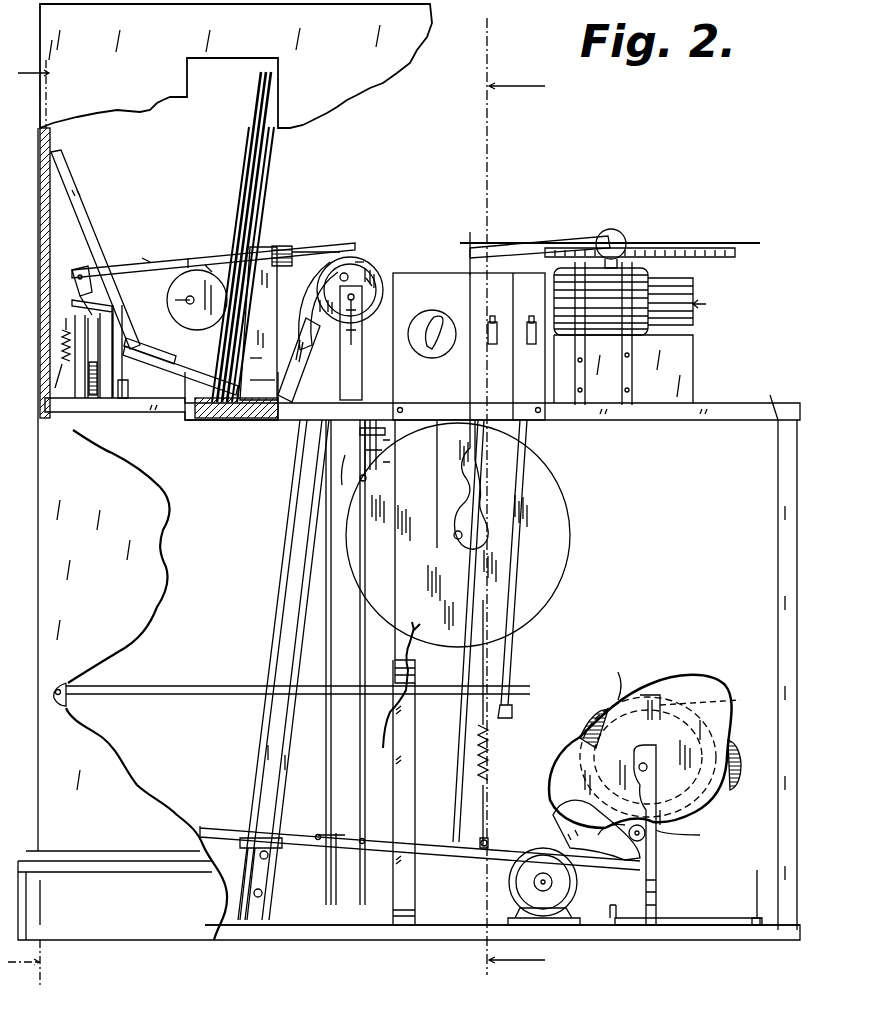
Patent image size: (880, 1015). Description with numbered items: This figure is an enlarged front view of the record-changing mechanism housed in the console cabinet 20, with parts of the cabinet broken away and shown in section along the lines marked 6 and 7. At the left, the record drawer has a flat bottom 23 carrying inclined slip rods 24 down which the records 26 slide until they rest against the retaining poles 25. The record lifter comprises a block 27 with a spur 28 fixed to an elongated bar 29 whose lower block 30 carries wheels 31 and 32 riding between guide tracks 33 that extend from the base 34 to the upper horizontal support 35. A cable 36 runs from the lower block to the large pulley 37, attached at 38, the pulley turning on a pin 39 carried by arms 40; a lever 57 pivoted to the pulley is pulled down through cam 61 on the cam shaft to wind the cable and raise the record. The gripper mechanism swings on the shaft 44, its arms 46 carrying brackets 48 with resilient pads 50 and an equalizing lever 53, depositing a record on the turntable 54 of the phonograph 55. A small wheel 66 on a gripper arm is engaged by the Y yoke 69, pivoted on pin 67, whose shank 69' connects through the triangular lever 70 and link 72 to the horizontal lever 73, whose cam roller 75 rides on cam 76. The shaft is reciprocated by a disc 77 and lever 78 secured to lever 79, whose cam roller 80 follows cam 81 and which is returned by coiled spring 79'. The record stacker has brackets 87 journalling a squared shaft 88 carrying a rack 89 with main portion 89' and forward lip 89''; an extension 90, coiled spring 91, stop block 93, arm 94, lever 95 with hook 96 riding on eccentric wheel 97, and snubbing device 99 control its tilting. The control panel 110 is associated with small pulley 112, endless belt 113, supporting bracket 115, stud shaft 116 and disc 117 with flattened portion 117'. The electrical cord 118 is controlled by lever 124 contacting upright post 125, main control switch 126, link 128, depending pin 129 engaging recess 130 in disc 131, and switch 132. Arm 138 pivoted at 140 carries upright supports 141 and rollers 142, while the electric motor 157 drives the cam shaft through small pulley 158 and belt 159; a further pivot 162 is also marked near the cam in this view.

The console cabinet 20 is at (430, 34).
The section line 7 is at (35, 522).
The section line 6 is at (503, 496).
The drawer bottom 23 is at (222, 418).
The slip rods 24 is at (215, 375).
The retaining poles 25 is at (266, 290).
The records 26 is at (258, 102).
The block 27 is at (292, 362).
The spur 28 is at (272, 372).
The elongated bar 29 is at (282, 578).
The lower block 30 is at (258, 872).
The upper wheels 31 is at (270, 855).
The lower wheels 32 is at (264, 892).
The guide tracks 33 is at (285, 760).
The base 34 is at (676, 938).
The upper horizontal support 35 is at (705, 420).
The cable 36 is at (314, 790).
The large pulley 37 is at (570, 525).
The cable attachment point 38 is at (366, 479).
The pin or shaft 39 is at (455, 540).
The arms 40 is at (444, 508).
The shaft 44 is at (356, 330).
The gripper arms 46 is at (470, 250).
The bearing brackets 48 is at (578, 242).
The resilient pads 50 is at (620, 232).
The equalizing lever 53 is at (604, 285).
The turntable 54 is at (740, 256).
The phonograph 55 is at (706, 304).
The lever 57 is at (470, 660).
The cam 61 is at (736, 782).
The small wheel 66 is at (302, 262).
The pin 67 is at (378, 434).
The Y yoke 69 is at (363, 343).
The yoke shank 69' is at (349, 460).
The triangular lever 70 is at (385, 432).
The link 72 is at (362, 640).
The horizontal lever 73 is at (432, 848).
The cam roller 75 is at (648, 848).
The cam 76 is at (680, 834).
The disc 77 is at (380, 264).
The lever 78 is at (300, 523).
The lever 79 is at (333, 846).
The coiled spring 79' is at (509, 722).
The cam roller 80 is at (626, 836).
The cam 81 is at (582, 830).
The brackets 87 is at (112, 412).
The squared shaft 88 is at (128, 380).
The rack 89 is at (95, 237).
The main supporting portion 89' is at (96, 182).
The forward lip 89'' is at (150, 346).
The extension 90 is at (115, 272).
The coiled spring 91 is at (55, 375).
The upstanding block 93 is at (78, 412).
The arm 94 is at (64, 268).
The lever 95 is at (145, 258).
The hook 96 is at (360, 260).
The eccentric wheel 97 is at (372, 280).
The snubbing device 99 is at (95, 412).
The control panel 110 is at (458, 374).
The small pulley 112 is at (272, 345).
The endless belt 113 is at (282, 262).
The supporting bracket 115 is at (182, 302).
The stud shaft 116 is at (190, 300).
The disc 117 is at (221, 252).
The flattened surface portion 117' is at (192, 241).
The electrical cord 118 is at (410, 628).
The lever 124 is at (236, 686).
The upright post 125 is at (415, 798).
The main control switch 126 is at (533, 345).
The link 128 is at (530, 592).
The depending pin 129 is at (662, 692).
The recess 130 is at (741, 688).
The disc 131 is at (618, 672).
The switch 132 is at (497, 344).
The arm 138 is at (702, 918).
The pivot 140 is at (757, 890).
The upright supports 141 is at (656, 897).
The base engaging rollers 142 is at (616, 912).
The electric motor 157 is at (510, 872).
The small pulley 158 is at (543, 874).
The belt 159 is at (552, 832).
The pivot 162 is at (639, 767).